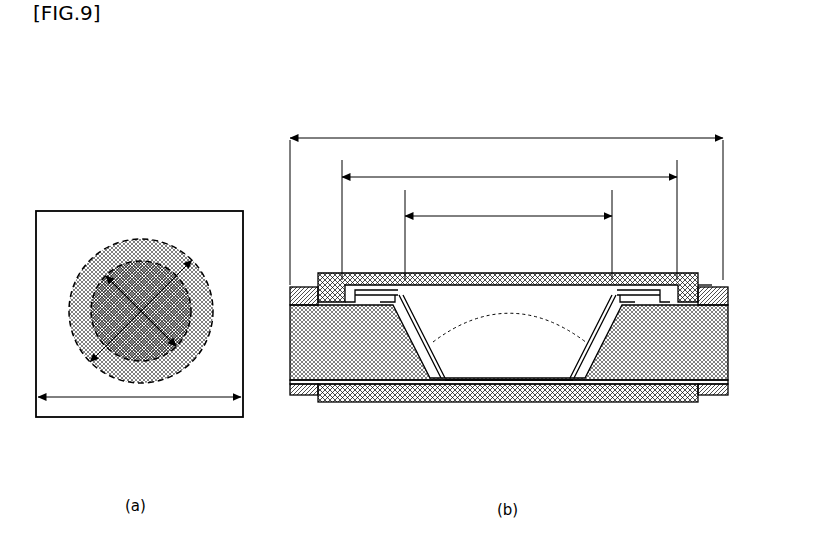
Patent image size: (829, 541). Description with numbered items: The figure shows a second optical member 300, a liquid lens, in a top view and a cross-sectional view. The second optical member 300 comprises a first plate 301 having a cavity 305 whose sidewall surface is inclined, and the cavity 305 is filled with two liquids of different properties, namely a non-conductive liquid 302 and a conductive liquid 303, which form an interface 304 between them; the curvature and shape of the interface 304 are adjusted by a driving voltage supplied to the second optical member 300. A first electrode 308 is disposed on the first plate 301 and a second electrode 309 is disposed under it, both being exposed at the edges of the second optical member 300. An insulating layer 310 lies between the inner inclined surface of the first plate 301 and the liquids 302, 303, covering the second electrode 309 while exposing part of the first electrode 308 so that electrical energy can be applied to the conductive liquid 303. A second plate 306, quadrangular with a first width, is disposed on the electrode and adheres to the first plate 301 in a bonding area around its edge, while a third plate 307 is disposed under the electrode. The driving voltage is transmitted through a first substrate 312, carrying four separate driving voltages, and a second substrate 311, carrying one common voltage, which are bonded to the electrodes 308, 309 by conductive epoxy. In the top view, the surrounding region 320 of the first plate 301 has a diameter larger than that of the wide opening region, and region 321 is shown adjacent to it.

The second optical member 300 is at (80, 82).
The first plate 301 is at (732, 345).
The non-conductive liquid 302 is at (465, 366).
The conductive liquid 303 is at (467, 300).
The interface 304 is at (542, 316).
The cavity 305 is at (553, 383).
The second plate 306 is at (141, 208).
The third plate 307 is at (509, 409).
The first electrode 308 is at (733, 302).
The second electrode 309 is at (733, 383).
The insulating layer 310 is at (413, 289).
The second substrate 311 is at (713, 281).
The first substrate 312 is at (713, 403).
The surrounding region 320 is at (189, 258).
The outer opening 321 is at (103, 271).